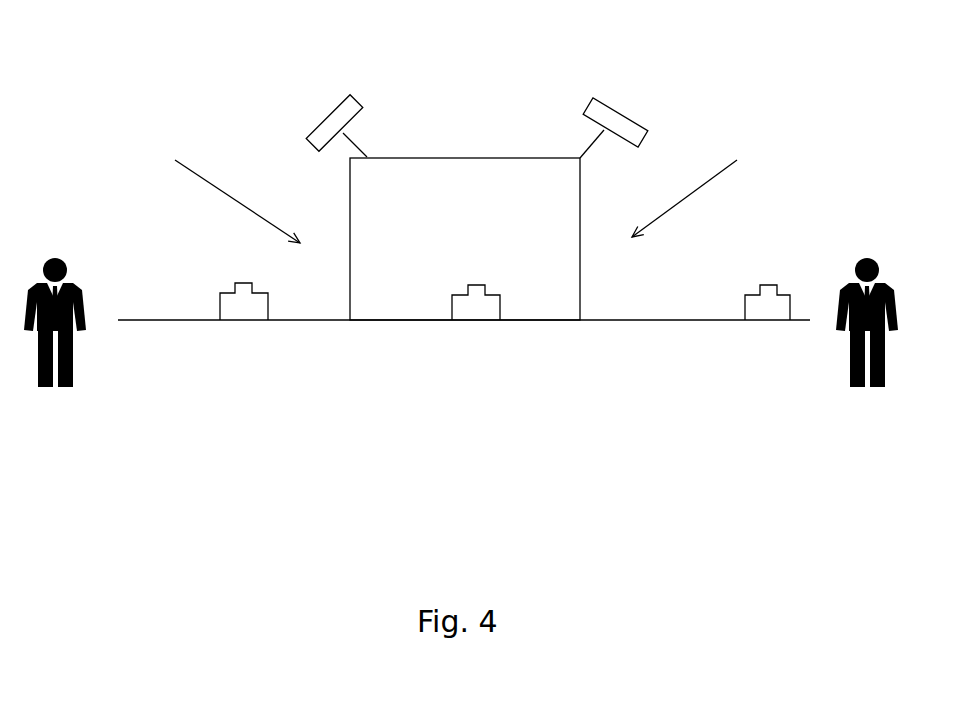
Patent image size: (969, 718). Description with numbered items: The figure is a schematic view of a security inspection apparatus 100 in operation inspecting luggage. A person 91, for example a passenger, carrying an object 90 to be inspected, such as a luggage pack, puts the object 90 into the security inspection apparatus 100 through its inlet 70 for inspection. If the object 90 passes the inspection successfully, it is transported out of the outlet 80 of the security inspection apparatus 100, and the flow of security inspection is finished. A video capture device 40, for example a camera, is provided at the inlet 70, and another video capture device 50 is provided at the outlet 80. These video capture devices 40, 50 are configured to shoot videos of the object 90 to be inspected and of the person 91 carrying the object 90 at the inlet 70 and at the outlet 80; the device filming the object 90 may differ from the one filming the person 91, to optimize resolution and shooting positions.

The security inspection apparatus 100 is at (498, 188).
The video capture device 40 is at (322, 128).
The video capture device 50 is at (610, 120).
The inlet 70 is at (226, 186).
The outlet 80 is at (701, 183).
The object 90 is at (765, 305).
The person 91 is at (72, 347).